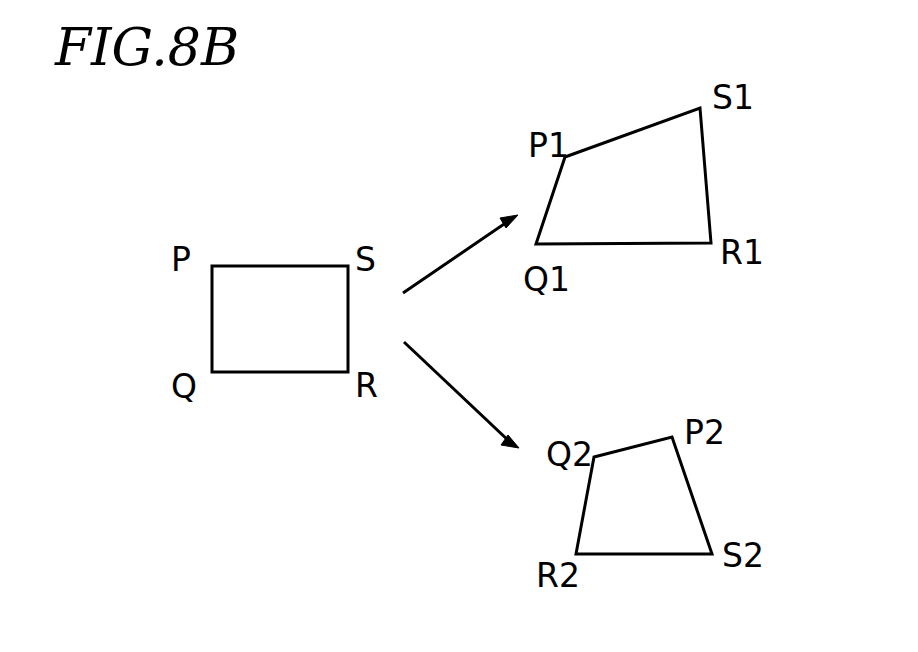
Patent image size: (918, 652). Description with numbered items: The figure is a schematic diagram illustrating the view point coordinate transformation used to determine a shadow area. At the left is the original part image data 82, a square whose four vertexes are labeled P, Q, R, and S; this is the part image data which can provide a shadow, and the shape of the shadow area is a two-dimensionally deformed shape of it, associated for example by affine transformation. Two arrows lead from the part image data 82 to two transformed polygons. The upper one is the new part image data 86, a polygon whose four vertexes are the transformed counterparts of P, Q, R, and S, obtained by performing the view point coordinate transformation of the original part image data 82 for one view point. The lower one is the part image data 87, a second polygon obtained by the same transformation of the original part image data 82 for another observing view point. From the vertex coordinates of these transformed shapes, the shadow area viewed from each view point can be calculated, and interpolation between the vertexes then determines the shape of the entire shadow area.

The part image data 82 is at (283, 353).
The new part image data 86 is at (664, 228).
The part image data 87 is at (644, 538).